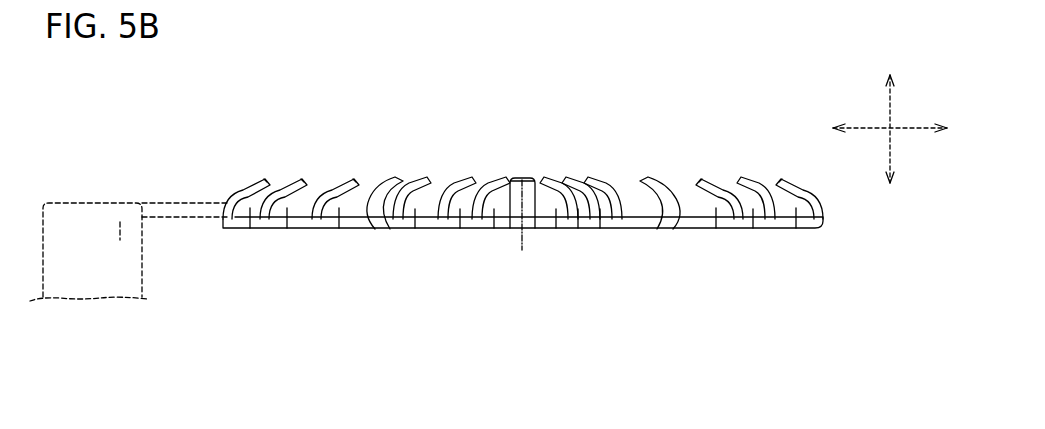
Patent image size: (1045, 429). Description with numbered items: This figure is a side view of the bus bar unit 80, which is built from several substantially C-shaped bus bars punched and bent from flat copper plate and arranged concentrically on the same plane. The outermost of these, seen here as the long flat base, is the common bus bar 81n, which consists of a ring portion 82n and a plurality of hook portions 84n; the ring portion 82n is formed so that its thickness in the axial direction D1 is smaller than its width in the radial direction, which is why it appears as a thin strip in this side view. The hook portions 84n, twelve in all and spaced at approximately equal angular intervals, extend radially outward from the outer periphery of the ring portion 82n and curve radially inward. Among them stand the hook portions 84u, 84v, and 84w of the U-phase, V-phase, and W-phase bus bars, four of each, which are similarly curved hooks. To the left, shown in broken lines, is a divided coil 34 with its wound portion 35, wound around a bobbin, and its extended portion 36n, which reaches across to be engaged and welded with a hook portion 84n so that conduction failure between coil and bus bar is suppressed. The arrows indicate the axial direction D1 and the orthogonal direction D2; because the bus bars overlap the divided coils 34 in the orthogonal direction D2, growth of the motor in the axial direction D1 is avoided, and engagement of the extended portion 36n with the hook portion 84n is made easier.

The divided coil 34 is at (77, 198).
The wound portion 35 is at (120, 220).
The extended portion 36n is at (170, 198).
The bus bar unit 80 is at (531, 193).
The bus bar 81n is at (244, 246).
The ring portion 82n is at (494, 224).
The hook portion 84n is at (250, 178).
The hook portion 84u is at (343, 172).
The hook portion 84v is at (430, 178).
The hook portion 84w is at (552, 180).
The axial direction D1 is at (903, 106).
The orthogonal direction D2 is at (914, 142).